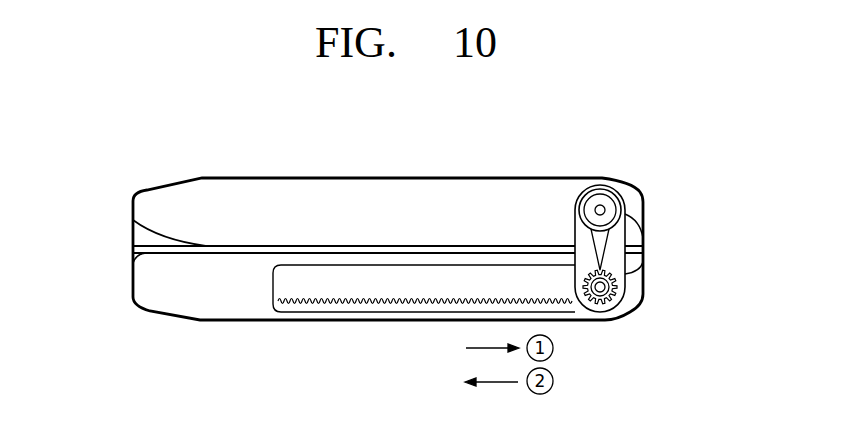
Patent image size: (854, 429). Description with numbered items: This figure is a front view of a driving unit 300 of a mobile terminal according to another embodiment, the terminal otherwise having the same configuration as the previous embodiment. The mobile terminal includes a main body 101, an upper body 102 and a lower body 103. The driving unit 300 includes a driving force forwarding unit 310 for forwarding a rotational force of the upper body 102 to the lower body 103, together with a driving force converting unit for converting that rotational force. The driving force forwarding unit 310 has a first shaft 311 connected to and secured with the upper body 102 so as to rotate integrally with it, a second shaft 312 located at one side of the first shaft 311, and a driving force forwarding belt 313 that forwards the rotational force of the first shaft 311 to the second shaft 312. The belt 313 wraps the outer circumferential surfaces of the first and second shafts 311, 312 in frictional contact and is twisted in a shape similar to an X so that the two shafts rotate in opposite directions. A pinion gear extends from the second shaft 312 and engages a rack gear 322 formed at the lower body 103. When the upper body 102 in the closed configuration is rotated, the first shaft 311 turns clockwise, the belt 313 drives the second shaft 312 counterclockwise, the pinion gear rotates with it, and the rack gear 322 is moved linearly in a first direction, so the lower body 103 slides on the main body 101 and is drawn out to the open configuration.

The main body 101 is at (142, 240).
The upper body 102 is at (354, 192).
The lower body 103 is at (243, 308).
The driving unit 300 is at (625, 325).
The driving force forwarding unit 310 is at (664, 248).
The first shaft 311 is at (612, 210).
The second shaft 312 is at (644, 287).
The driving force forwarding belt 313 is at (604, 250).
The rack gear 322 is at (405, 303).